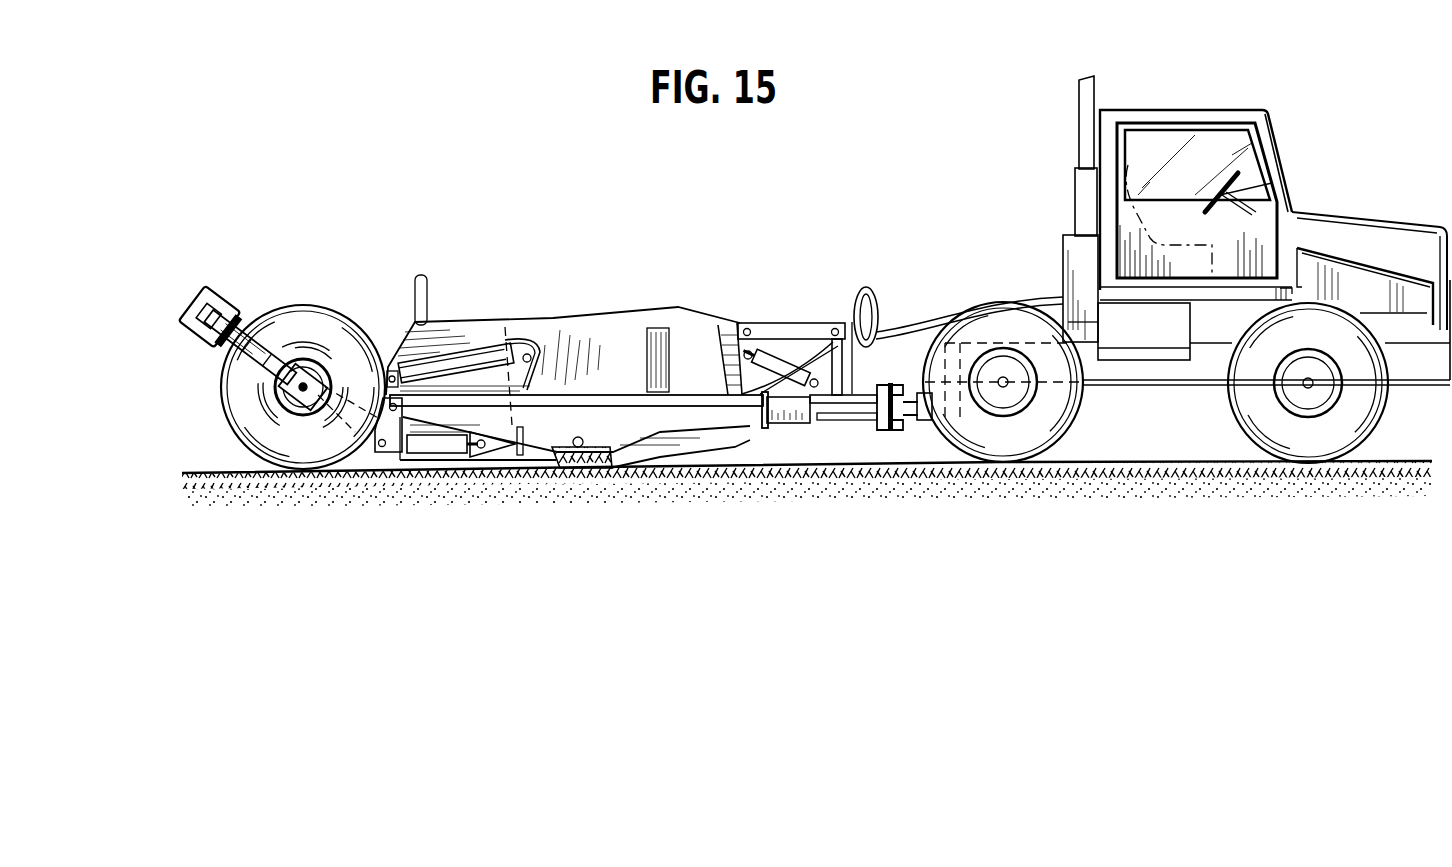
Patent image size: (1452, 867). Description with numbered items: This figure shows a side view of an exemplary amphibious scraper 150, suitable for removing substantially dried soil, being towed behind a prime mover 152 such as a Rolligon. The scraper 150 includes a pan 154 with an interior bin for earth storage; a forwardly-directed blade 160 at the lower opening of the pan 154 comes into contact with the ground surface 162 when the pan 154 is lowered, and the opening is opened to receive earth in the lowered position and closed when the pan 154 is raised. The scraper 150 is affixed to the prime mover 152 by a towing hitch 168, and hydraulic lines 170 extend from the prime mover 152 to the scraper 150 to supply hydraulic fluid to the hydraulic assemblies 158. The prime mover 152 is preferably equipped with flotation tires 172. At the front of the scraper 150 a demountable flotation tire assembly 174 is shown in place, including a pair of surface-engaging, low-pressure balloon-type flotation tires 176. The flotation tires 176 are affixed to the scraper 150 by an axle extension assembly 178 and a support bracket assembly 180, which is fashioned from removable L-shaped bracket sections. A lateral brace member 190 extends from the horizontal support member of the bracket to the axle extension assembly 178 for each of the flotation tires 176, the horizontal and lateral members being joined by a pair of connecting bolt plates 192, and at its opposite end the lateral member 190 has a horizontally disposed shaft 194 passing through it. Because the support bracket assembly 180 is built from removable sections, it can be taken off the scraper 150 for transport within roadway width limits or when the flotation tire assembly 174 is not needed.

The amphibious scraper 150 is at (626, 346).
The prime mover 152 is at (1280, 108).
The pan 154 is at (572, 330).
The hydraulic assemblies 158 is at (462, 366).
The blade 160 is at (579, 460).
The ground surface 162 is at (781, 532).
The towing hitch 168 is at (892, 432).
The hydraulic lines 170 is at (885, 336).
The flotation tires 172 is at (1012, 452).
The demountable flotation tire assembly 174 is at (333, 305).
The flotation tires 176 is at (293, 316).
The axle extension assembly 178 is at (286, 409).
The support bracket assembly 180 is at (199, 292).
The lateral brace member 190 is at (241, 365).
The connecting bolt plates 192 is at (232, 318).
The horizontally disposed shaft 194 is at (305, 385).